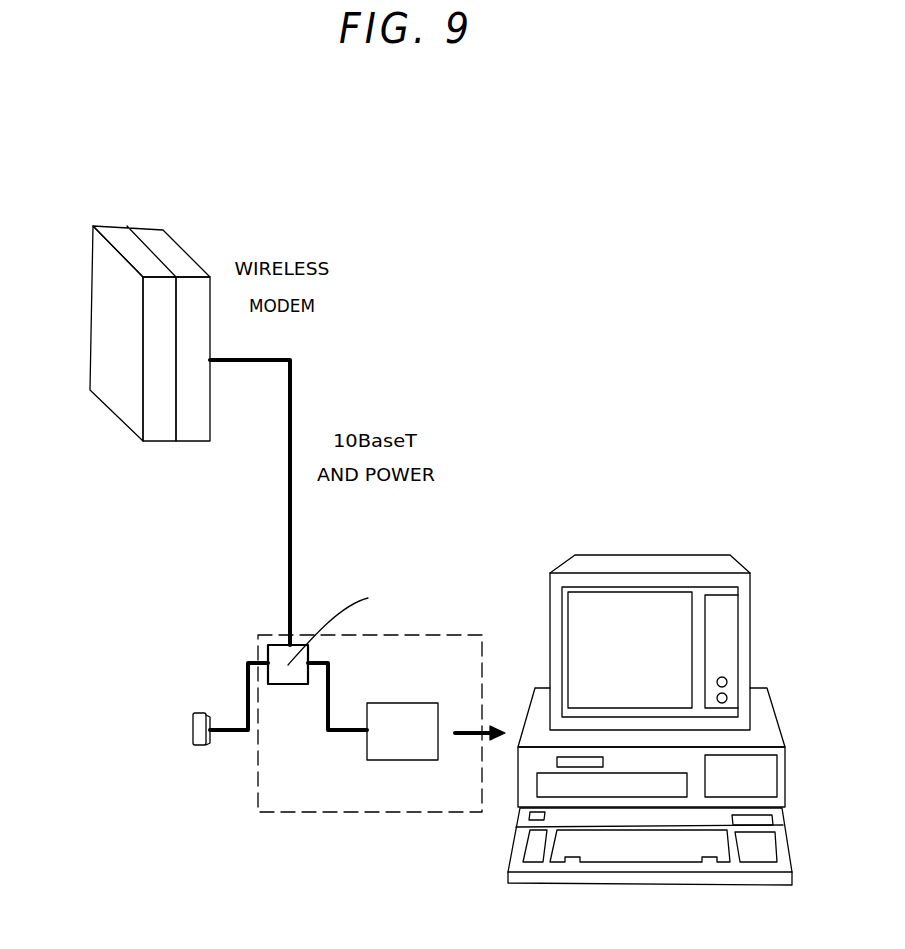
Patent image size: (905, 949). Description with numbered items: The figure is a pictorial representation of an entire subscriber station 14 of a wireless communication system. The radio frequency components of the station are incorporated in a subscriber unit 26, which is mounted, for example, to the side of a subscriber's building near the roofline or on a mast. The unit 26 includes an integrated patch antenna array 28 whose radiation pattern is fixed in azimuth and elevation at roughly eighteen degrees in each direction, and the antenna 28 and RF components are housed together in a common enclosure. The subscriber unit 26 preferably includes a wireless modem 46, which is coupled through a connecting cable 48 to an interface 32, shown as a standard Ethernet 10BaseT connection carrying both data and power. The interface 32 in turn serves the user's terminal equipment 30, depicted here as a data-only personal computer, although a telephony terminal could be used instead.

The computer system 14 is at (531, 487).
The subscriber unit 26 is at (121, 337).
The integrated patch antenna array 28 is at (100, 315).
The personal computer 30 is at (651, 566).
The Ethernet 10BaseT connection 32 is at (295, 795).
The wireless modem 46 is at (167, 242).
The connecting cable 48 is at (293, 396).